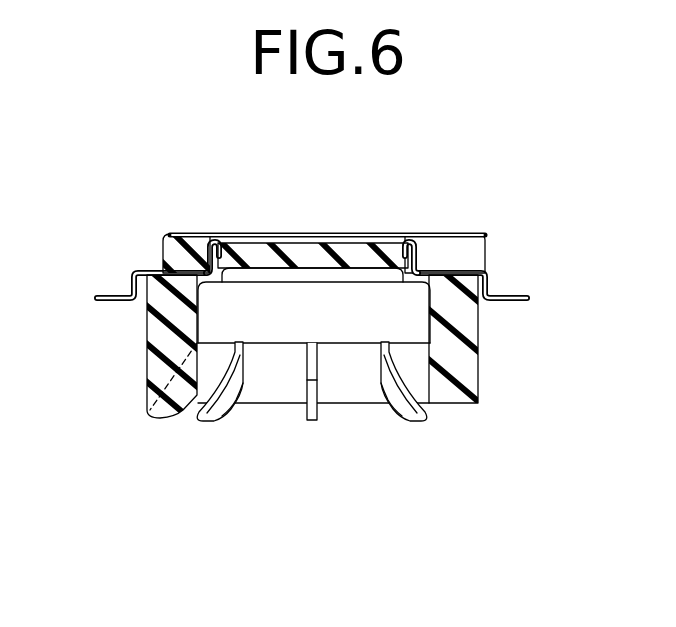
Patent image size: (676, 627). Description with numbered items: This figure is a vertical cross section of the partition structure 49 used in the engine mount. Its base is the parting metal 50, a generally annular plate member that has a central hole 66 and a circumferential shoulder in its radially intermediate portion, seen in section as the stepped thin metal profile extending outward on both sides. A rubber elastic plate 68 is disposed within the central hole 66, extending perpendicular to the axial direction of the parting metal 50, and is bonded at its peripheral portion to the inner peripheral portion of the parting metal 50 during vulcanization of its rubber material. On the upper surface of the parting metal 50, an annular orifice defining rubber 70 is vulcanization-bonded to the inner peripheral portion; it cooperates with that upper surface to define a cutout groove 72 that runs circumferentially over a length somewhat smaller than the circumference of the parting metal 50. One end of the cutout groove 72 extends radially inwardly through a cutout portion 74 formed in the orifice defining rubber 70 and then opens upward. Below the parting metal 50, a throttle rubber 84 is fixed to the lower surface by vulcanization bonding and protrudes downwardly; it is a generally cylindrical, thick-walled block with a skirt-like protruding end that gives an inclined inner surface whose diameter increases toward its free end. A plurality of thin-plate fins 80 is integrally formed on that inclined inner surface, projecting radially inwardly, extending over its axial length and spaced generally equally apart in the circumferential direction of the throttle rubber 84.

The partition structure 49 is at (399, 199).
The parting metal 50 is at (117, 303).
The central hole 66 is at (223, 237).
The rubber elastic plate 68 is at (302, 263).
The orifice defining rubber 70 is at (200, 245).
The cutout groove 72 is at (162, 258).
The cutout portion 74 is at (423, 258).
The fins 80 is at (186, 392).
The throttle rubber 84 is at (453, 353).